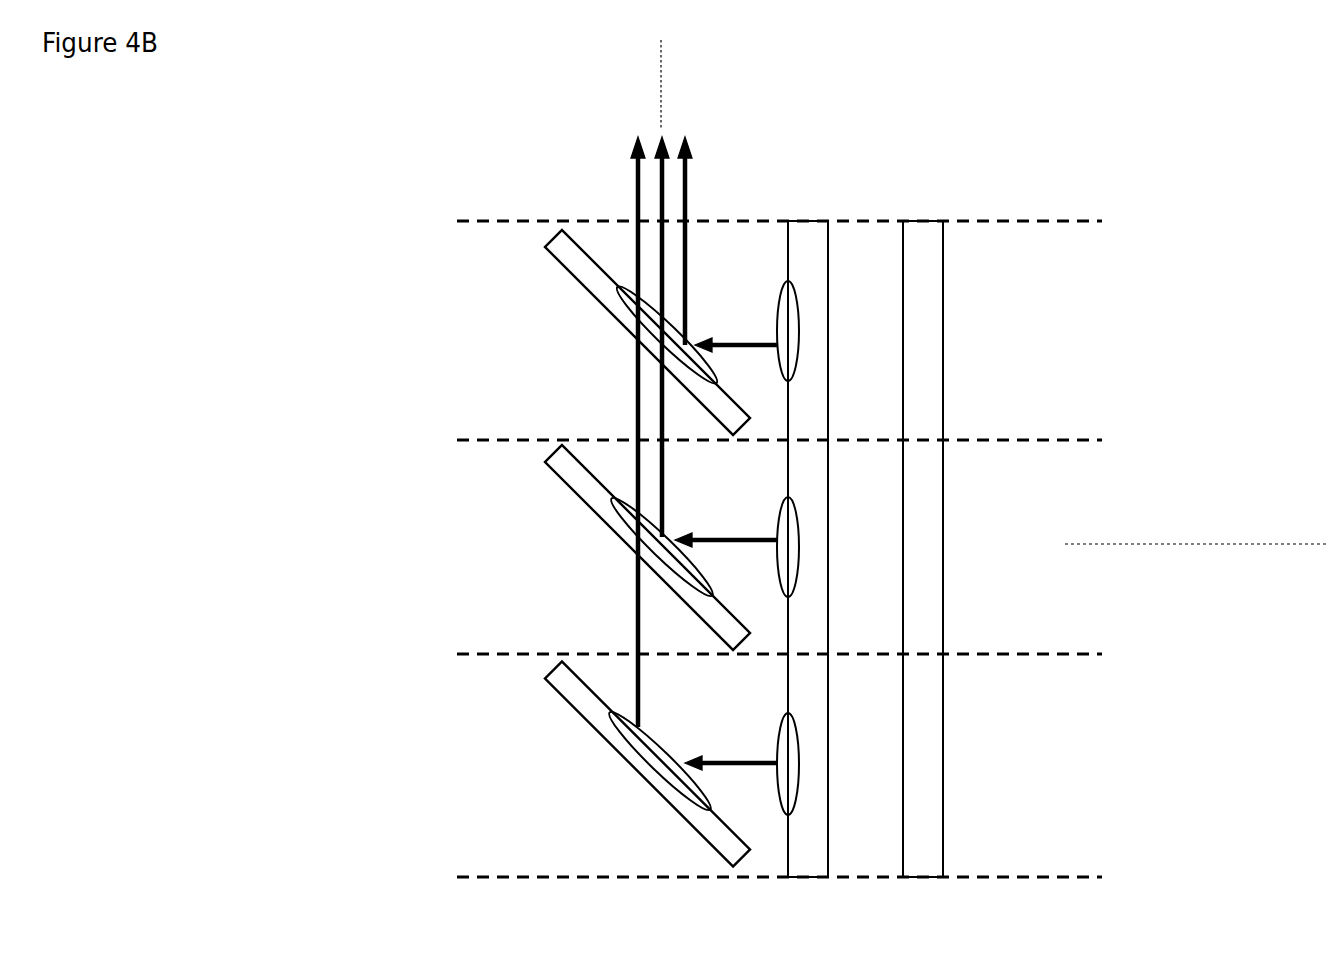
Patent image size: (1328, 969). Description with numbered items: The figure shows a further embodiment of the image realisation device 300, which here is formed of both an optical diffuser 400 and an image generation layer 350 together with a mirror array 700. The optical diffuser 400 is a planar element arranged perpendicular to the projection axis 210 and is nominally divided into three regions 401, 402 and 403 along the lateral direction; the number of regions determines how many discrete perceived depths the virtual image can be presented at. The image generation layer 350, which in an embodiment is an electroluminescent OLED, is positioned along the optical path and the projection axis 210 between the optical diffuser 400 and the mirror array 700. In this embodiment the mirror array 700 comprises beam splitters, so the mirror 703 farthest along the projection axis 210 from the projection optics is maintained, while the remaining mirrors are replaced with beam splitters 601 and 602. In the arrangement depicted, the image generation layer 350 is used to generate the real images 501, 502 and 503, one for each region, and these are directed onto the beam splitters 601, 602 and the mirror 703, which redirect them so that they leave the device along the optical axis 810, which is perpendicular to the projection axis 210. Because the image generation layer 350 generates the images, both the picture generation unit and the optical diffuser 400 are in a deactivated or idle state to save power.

The projection axis 210 is at (1187, 540).
The image realisation device 300 is at (1187, 142).
The image generation layer 350 is at (803, 235).
The optical diffuser 400 is at (923, 260).
The first region of the optical diffuser 401 is at (1012, 278).
The second region of the optical diffuser 402 is at (1012, 492).
The third region of the optical diffuser 403 is at (1012, 708).
The real image 501 is at (778, 308).
The real image 502 is at (777, 528).
The real image 503 is at (778, 745).
The beam splitter 601 is at (598, 293).
The beam splitter 602 is at (602, 512).
The mirror array 700 is at (628, 575).
The mirror 703 is at (615, 740).
The optical axis 810 is at (660, 125).